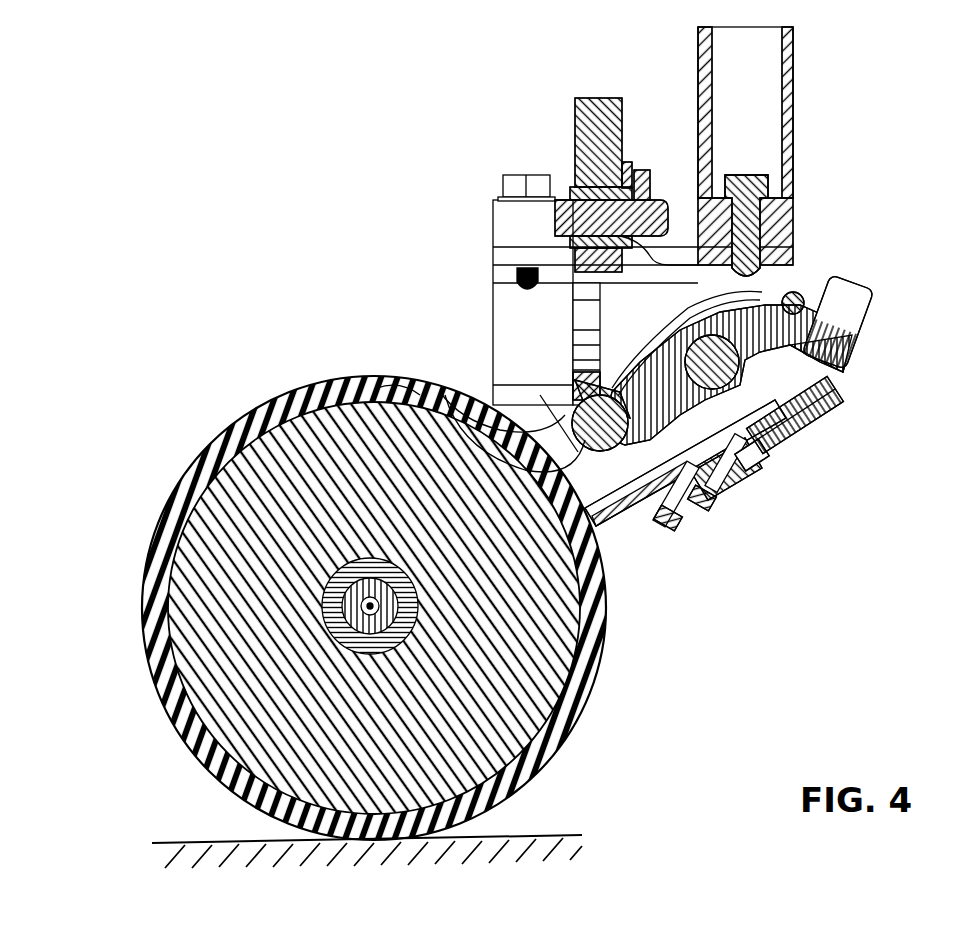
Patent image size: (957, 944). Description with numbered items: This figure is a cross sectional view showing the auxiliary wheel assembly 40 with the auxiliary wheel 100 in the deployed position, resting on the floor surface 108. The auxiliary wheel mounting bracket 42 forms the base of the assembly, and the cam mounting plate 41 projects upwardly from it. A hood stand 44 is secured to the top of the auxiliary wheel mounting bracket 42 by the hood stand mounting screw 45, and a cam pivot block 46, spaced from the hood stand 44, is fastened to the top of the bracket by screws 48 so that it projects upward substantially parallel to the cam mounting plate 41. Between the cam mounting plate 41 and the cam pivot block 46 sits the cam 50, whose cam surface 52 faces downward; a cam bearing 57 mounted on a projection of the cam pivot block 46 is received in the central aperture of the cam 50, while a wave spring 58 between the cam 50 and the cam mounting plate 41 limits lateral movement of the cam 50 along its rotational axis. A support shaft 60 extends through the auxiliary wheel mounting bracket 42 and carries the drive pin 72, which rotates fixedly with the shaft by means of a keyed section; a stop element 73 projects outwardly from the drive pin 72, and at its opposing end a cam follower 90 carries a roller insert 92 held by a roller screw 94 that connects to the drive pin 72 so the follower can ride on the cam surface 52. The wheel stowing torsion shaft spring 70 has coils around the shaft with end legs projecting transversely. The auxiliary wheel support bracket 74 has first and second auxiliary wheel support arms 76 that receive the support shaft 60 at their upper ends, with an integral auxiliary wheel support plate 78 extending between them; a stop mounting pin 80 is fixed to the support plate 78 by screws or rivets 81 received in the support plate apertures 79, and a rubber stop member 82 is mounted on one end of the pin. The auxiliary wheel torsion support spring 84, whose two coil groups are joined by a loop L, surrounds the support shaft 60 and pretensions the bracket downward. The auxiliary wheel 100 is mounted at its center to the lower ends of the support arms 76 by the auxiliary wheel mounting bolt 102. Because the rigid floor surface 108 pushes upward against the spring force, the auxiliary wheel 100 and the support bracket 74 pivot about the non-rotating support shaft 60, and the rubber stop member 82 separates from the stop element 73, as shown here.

The auxiliary wheel assembly 40 is at (345, 195).
The cam mounting plate 41 is at (645, 185).
The auxiliary wheel mounting bracket 42 is at (485, 299).
The hood stand 44 is at (795, 97).
The hood stand mounting screw 45 is at (742, 175).
The cam pivot block 46 is at (553, 198).
The screws 48 is at (515, 178).
The cam 50 is at (596, 97).
The cam surface 52 is at (540, 395).
The cam bearing 57 is at (624, 165).
The wave spring 58 is at (575, 228).
The support shaft 60 is at (710, 345).
The wheel stowing torsion shaft spring 70 is at (680, 545).
The drive pin 72 is at (778, 318).
The stop element 73 is at (853, 360).
The auxiliary wheel support bracket 74 is at (864, 278).
The auxiliary wheel support arms 76 is at (445, 395).
The auxiliary wheel support plate 78 is at (598, 530).
The support plate apertures 79 is at (705, 500).
The stop mounting pin 80 is at (752, 470).
The stop mounting pin screws or rivets 81 is at (668, 528).
The rubber stop member 82 is at (822, 440).
The auxiliary wheel torsion support spring 84 is at (668, 312).
The cam follower 90 is at (582, 372).
The roller insert 92 is at (377, 388).
The roller screw 94 is at (600, 350).
The auxiliary wheel 100 is at (543, 658).
The auxiliary wheel mounting bolt 102 is at (545, 685).
The floor surface 108 is at (533, 830).
The loop L is at (790, 305).